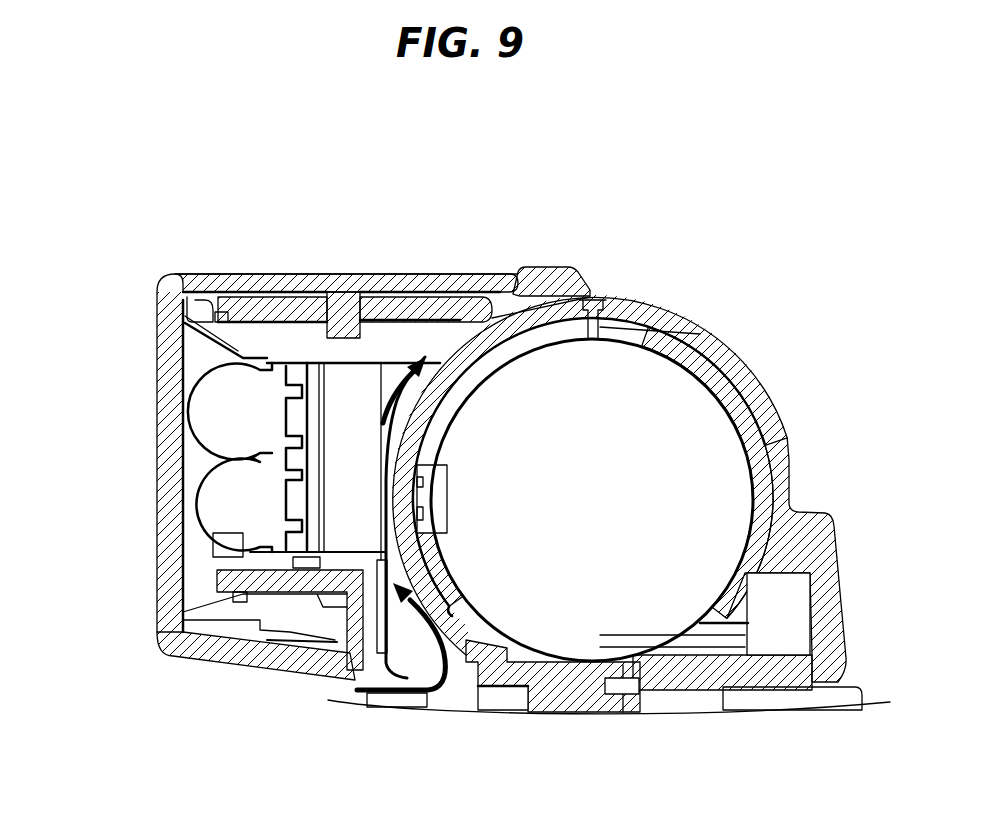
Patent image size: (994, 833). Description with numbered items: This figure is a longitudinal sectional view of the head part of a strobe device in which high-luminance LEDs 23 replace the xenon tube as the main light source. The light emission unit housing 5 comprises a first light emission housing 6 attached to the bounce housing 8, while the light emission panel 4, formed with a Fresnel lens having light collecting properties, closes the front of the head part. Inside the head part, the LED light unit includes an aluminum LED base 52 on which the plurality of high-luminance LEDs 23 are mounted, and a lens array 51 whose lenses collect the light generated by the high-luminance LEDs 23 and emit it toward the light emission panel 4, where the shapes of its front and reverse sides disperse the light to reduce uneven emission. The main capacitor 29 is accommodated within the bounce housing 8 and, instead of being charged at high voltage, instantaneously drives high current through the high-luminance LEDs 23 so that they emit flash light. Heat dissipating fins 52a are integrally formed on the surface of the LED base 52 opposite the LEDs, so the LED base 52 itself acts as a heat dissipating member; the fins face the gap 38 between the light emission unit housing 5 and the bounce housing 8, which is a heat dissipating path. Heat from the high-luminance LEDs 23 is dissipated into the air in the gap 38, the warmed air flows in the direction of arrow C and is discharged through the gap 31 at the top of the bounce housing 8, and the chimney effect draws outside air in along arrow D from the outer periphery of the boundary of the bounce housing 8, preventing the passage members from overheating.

The light emission panel 4 is at (163, 472).
The light emission unit housing 5 is at (348, 285).
The first light emission housing 6 is at (550, 275).
The bounce housing 8 is at (700, 330).
The high-luminance LEDs 23 is at (297, 505).
The main capacitor 29 is at (638, 478).
The gap 31 is at (593, 293).
The gap 38 is at (383, 478).
The lens array 51 is at (255, 412).
The LED base 52 is at (321, 383).
The heat dissipating fins 52a is at (378, 390).
The arrow C is at (397, 388).
The arrow D is at (452, 669).